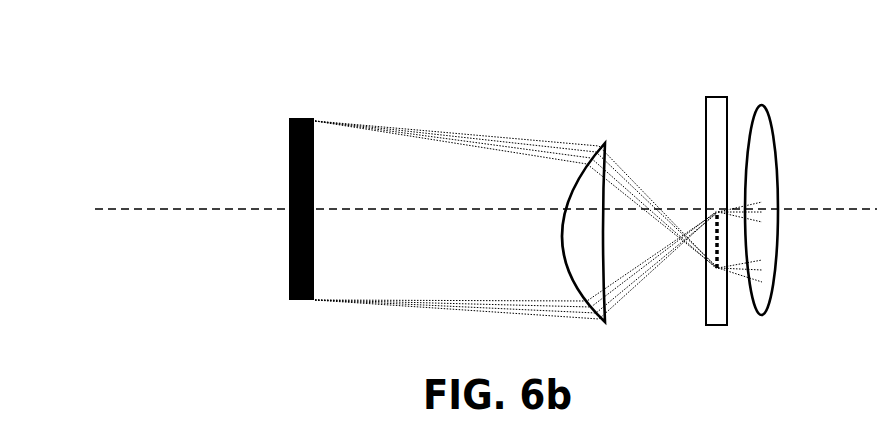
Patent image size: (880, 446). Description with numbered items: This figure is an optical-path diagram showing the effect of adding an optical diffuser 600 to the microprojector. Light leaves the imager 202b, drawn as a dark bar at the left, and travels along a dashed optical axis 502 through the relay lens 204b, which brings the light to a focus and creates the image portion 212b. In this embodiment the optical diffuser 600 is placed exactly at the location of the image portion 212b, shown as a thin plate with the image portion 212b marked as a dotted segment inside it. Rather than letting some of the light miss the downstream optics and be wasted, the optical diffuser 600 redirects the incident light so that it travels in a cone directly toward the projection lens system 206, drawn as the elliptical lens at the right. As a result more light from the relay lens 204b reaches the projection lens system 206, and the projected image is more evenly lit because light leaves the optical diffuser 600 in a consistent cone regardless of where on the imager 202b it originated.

The optical axis 502 is at (204, 204).
The imager 202b is at (300, 114).
The relay lens 204b is at (600, 136).
The optical diffuser 600 is at (716, 94).
The image portion 212b is at (717, 282).
The projection lens system 206 is at (784, 134).